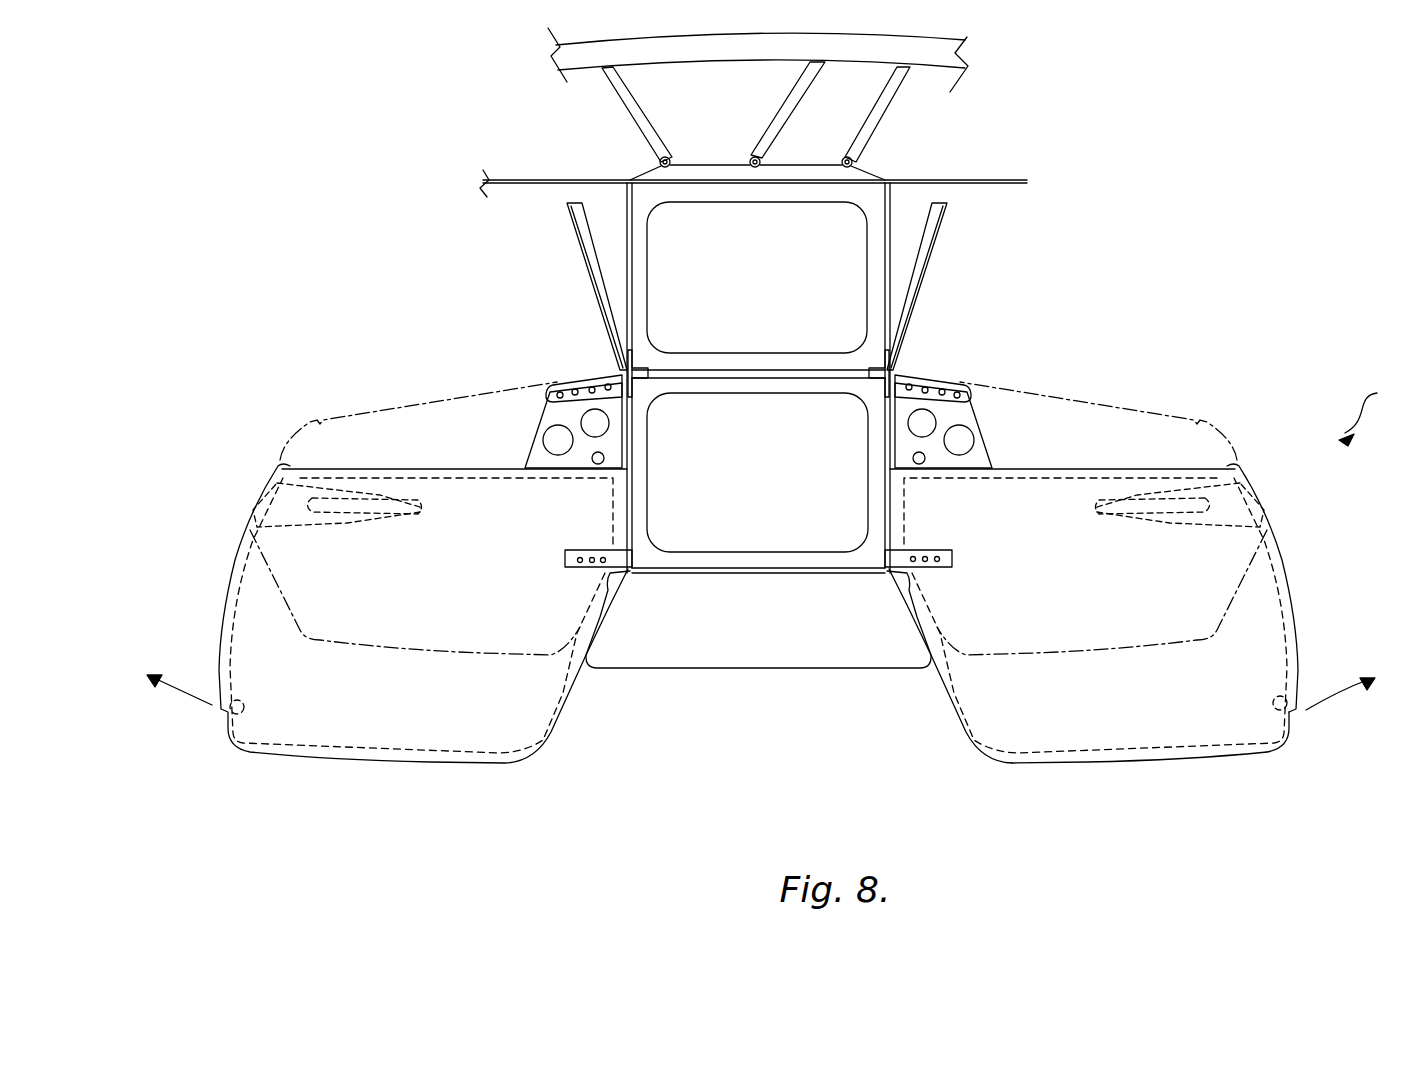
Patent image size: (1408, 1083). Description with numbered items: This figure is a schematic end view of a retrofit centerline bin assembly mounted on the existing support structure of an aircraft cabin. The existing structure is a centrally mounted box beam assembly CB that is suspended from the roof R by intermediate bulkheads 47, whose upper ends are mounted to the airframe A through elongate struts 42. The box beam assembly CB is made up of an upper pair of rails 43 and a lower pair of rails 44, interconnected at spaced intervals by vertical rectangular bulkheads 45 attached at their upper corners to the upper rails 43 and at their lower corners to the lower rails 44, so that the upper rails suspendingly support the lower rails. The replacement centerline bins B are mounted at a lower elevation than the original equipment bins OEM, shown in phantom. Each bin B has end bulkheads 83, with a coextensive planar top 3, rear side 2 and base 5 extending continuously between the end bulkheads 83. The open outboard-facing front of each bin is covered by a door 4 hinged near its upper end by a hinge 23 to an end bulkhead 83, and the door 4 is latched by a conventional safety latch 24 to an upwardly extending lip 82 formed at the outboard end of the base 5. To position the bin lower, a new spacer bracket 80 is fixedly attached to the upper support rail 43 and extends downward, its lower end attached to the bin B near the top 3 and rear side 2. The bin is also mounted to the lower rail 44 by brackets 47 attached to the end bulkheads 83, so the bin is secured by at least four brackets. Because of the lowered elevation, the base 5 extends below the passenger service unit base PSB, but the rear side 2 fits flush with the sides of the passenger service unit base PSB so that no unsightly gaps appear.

The airframe A is at (563, 70).
The elongate struts 42 is at (637, 123).
The roof R is at (983, 183).
The box beam assembly CB is at (761, 398).
The intermediate bulkheads 47 is at (875, 280).
The vertical rectangular bulkheads 45 is at (873, 463).
The lower pair of rails 44 is at (638, 565).
The upper pair of rails 43 is at (633, 370).
The spacer bracket 80 is at (978, 408).
The passenger service unit base PSB is at (720, 670).
The original equipment bins OEM is at (1231, 426).
The end bulkheads 83 is at (431, 597).
The planar top 3 is at (1052, 470).
The rear side 2 is at (960, 727).
The base 5 is at (1148, 755).
The upwardly extending lip 82 is at (1292, 731).
The door 4 is at (1294, 596).
The hinge 23 is at (1153, 533).
The safety latch 24 is at (1278, 710).
The replacement centerline bins B is at (1368, 415).